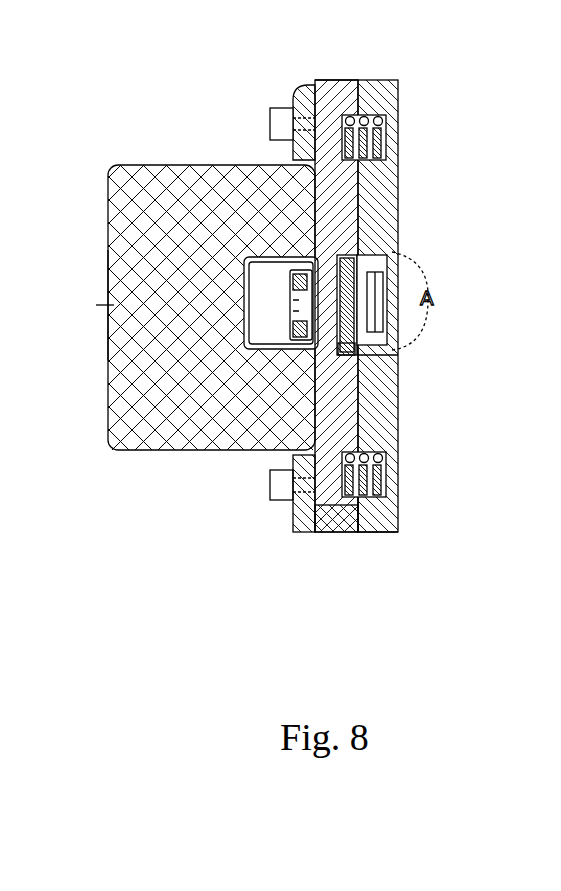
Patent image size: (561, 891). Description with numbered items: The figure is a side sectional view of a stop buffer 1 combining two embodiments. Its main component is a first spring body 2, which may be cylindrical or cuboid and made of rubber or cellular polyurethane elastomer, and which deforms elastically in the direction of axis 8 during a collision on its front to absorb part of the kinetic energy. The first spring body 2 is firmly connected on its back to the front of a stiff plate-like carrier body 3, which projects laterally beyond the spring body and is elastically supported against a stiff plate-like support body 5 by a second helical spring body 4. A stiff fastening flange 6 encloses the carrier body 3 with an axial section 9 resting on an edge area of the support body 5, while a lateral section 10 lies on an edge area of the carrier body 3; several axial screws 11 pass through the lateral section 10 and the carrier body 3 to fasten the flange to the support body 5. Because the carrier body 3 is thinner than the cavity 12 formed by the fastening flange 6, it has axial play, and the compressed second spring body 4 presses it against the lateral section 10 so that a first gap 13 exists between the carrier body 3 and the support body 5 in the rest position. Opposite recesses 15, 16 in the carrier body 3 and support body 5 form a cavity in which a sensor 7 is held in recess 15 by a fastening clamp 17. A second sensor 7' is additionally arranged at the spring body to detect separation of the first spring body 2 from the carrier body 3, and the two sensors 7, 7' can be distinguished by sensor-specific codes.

The stop buffer 1 is at (134, 100).
The first spring body 2 is at (134, 450).
The carrier body 3 is at (334, 532).
The second helical spring body 4 is at (392, 142).
The support body 5 is at (376, 532).
The fastening flange 6 is at (298, 532).
The sensor 7 is at (407, 215).
The second sensor 7' is at (227, 424).
The axis 8 is at (105, 305).
The axial section 9 is at (340, 80).
The lateral section 10 is at (295, 82).
The axial screws 11 is at (270, 112).
The cavity 12 is at (362, 80).
The first gap 13 is at (400, 412).
The recess 15 is at (398, 360).
The recess 16 is at (388, 340).
The fastening clamp 17 is at (388, 285).